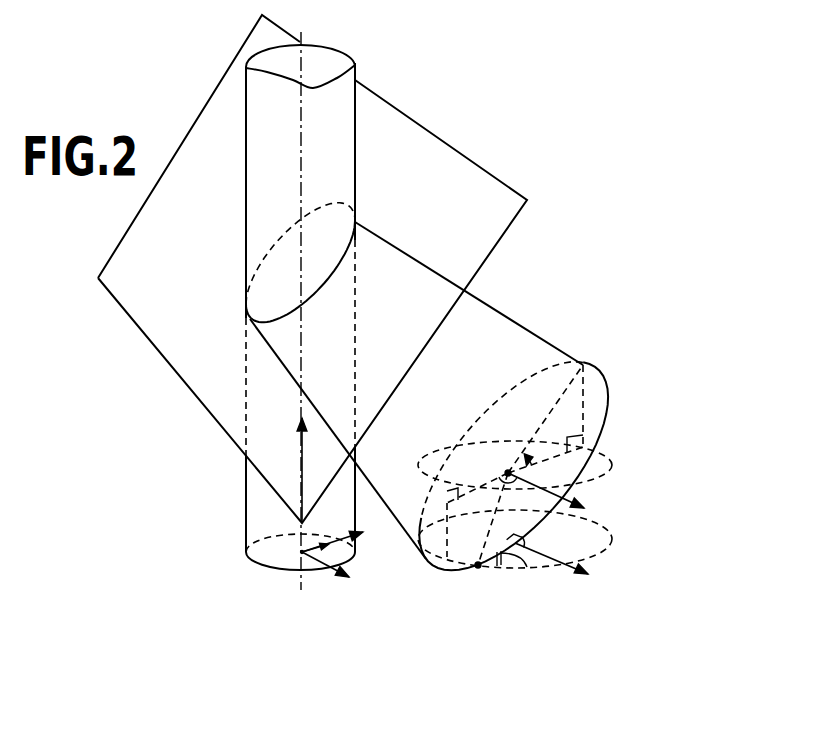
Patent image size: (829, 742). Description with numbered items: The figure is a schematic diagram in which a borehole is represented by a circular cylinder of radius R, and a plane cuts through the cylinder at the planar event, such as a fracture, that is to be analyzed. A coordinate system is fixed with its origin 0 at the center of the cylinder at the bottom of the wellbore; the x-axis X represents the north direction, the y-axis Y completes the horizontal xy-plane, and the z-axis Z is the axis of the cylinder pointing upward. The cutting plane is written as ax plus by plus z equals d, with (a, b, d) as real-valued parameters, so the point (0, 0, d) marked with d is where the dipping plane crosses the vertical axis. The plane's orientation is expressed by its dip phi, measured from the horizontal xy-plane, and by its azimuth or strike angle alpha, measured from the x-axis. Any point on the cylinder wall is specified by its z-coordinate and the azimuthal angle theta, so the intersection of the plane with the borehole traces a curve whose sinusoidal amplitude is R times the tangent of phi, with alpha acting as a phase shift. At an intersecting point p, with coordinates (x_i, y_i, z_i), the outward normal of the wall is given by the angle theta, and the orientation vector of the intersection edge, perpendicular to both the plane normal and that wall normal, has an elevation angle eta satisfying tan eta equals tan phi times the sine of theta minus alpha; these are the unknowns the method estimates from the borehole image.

The z-axis Z is at (290, 470).
The x-axis X is at (453, 531).
The y-axis Y is at (340, 534).
The radius R is at (318, 541).
The origin 0 is at (292, 552).
The plane parameter d is at (508, 473).
The dip phi is at (544, 439).
The azimuth alpha is at (499, 475).
The azimuthal angle theta is at (522, 541).
The orientation angle eta is at (519, 575).
The intersecting point p is at (478, 565).